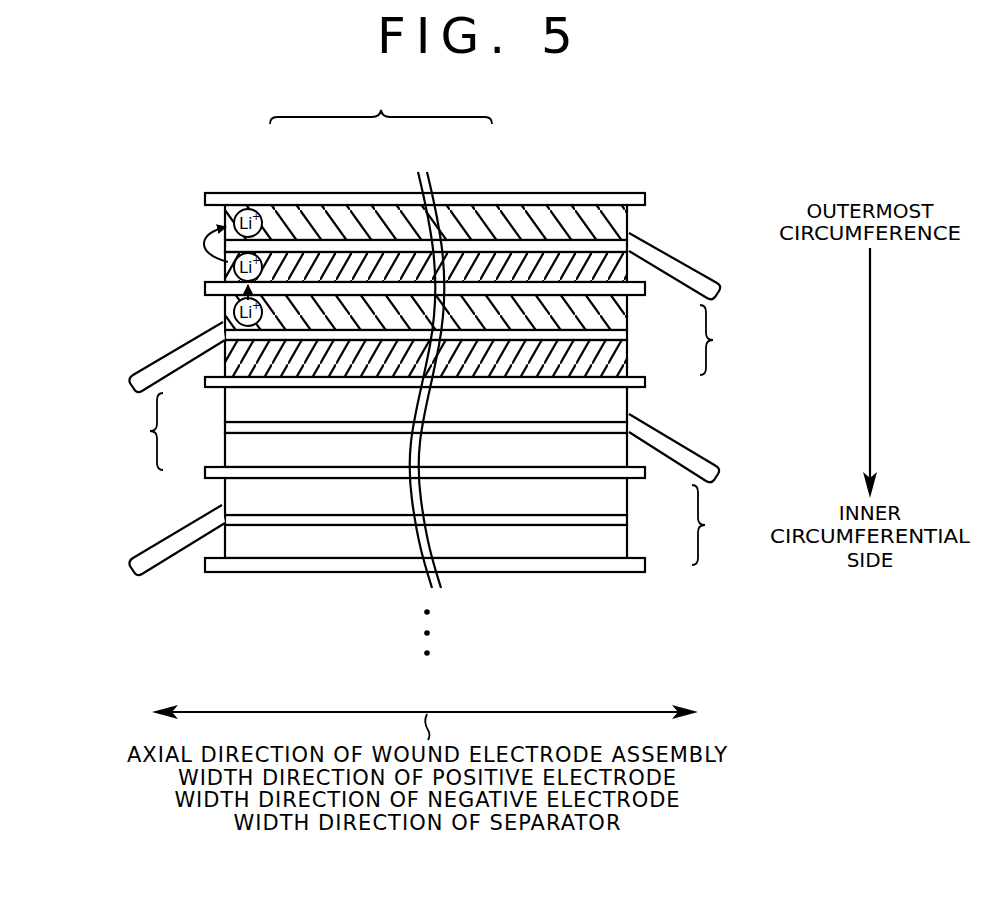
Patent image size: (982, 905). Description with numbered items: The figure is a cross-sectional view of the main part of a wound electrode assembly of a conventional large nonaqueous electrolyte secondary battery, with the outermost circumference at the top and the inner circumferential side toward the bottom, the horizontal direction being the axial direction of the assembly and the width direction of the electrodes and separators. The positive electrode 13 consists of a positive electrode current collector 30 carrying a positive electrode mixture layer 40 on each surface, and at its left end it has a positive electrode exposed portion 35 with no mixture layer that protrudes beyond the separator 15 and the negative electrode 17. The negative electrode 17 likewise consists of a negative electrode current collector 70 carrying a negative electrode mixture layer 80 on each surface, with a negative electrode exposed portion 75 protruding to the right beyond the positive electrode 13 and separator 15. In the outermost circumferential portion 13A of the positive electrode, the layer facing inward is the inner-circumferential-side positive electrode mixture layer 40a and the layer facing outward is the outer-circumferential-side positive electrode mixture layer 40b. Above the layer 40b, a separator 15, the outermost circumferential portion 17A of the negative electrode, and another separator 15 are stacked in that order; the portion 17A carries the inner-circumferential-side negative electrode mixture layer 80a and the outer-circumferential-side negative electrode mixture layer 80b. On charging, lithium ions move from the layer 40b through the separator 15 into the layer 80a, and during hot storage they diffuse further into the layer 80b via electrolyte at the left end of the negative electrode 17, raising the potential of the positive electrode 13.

The positive electrode 13 is at (718, 525).
The outermost circumferential portion of the positive electrode 13A is at (728, 340).
The separator 15 is at (595, 197).
The negative electrode 17 is at (138, 431).
The outermost circumferential portion of the negative electrode 17A is at (381, 101).
The positive electrode current collector 30 is at (628, 335).
The positive electrode exposed portion 35 is at (178, 343).
The positive electrode mixture layer 40 is at (627, 498).
The inner-circumferential-side positive electrode mixture layer 40a is at (628, 362).
The outer-circumferential-side positive electrode mixture layer 40b is at (628, 313).
The negative electrode current collector 70 is at (357, 247).
The negative electrode exposed portion 75 is at (678, 255).
The negative electrode mixture layer 80 is at (225, 403).
The inner-circumferential-side negative electrode mixture layer 80a is at (290, 265).
The outer-circumferential-side negative electrode mixture layer 80b is at (467, 218).